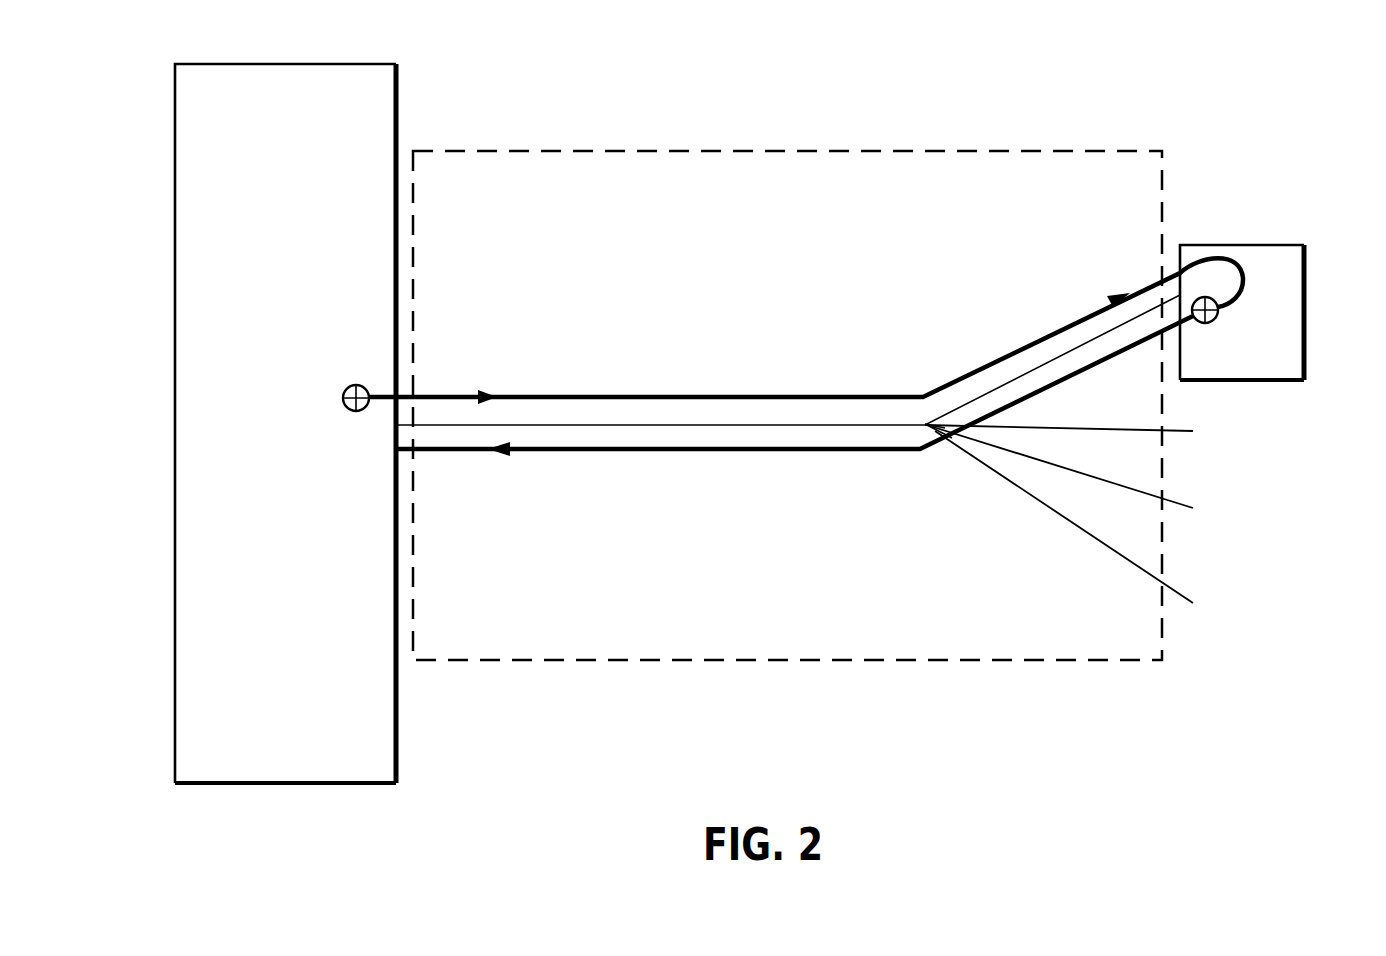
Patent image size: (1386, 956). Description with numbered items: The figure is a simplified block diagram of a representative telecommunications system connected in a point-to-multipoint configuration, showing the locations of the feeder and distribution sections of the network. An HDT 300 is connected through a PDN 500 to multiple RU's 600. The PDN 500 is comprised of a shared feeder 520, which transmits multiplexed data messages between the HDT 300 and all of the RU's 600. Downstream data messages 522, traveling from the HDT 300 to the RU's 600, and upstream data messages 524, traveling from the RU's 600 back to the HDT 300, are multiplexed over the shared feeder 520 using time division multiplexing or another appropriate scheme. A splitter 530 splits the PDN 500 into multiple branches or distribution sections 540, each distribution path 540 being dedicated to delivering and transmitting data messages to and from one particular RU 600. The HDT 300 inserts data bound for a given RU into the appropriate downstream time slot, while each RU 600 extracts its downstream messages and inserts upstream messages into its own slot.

The HDT 300 is at (303, 63).
The PDN 500 is at (822, 150).
The shared feeder 520 is at (445, 425).
The downstream data messages 522 is at (650, 395).
The upstream data messages 524 is at (695, 452).
The splitter 530 is at (925, 424).
The distribution path 540 is at (1043, 362).
The RU 600 is at (1257, 244).